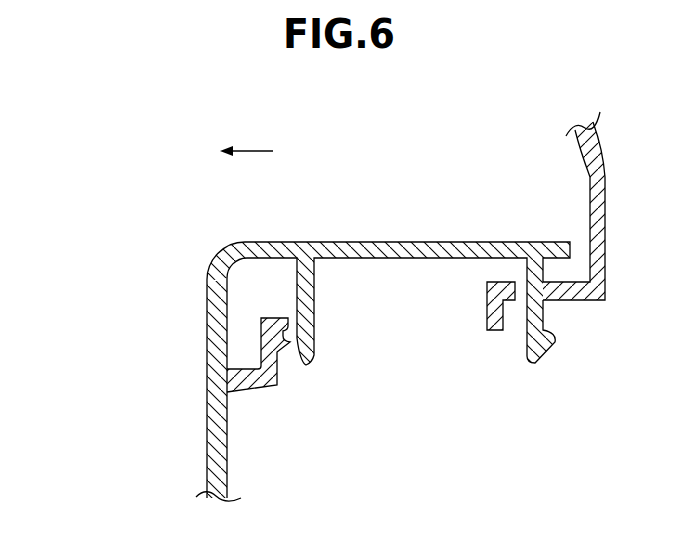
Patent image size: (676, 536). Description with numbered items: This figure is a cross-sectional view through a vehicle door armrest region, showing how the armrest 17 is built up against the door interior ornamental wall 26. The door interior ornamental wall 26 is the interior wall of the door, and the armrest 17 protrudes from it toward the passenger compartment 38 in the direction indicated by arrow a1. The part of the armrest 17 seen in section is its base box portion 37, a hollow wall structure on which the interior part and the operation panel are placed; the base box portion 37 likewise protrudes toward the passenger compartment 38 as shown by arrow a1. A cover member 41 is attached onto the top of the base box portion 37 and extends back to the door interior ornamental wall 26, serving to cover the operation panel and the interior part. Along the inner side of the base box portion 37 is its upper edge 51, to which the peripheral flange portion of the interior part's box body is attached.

The armrest 17 is at (134, 434).
The door interior ornamental wall 26 is at (583, 152).
The base box portion 37 is at (207, 490).
The passenger compartment 38 is at (63, 220).
The cover member 41 is at (384, 241).
The upper edge 51 is at (276, 318).
The arrow a1 is at (246, 138).